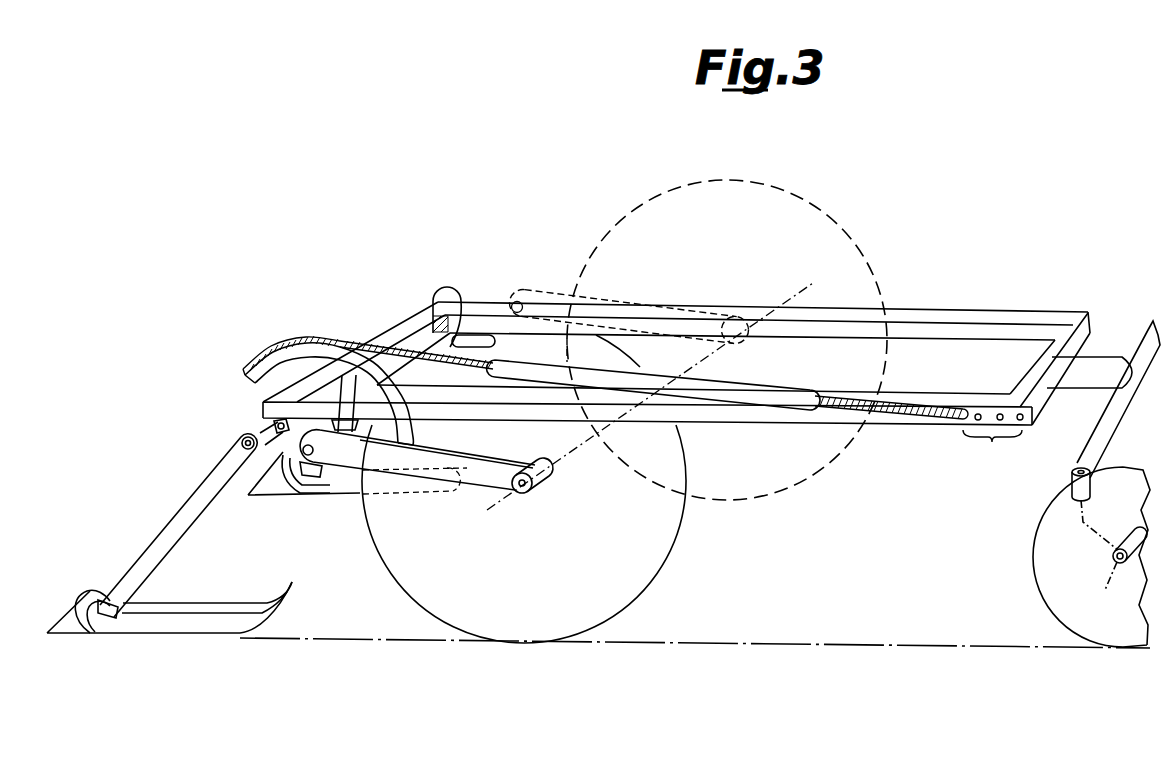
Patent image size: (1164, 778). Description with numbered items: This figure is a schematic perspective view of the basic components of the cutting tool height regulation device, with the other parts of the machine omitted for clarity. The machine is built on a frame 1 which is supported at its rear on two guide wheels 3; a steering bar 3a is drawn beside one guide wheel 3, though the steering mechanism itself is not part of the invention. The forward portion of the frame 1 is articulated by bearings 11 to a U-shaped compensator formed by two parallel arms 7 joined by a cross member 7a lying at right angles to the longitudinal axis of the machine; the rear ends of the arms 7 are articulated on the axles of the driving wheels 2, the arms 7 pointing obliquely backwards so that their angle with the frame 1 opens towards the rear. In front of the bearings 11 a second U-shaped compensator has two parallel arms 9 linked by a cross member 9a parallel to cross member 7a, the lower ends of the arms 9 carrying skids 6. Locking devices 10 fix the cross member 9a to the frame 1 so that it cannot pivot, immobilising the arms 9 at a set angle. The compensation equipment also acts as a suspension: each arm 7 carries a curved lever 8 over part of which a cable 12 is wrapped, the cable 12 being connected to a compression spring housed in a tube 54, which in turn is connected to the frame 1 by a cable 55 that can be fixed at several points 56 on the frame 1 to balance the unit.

The frame 1 is at (978, 317).
The driving wheels 2 is at (655, 567).
The guide wheels 3 is at (1043, 562).
The steering bar 3a is at (1147, 345).
The skids 6 is at (217, 612).
The arms 7 is at (447, 470).
The cross member 7a is at (458, 289).
The curved lever 8 is at (295, 362).
The arms 9 is at (203, 493).
The cross member 9a is at (268, 423).
The locking devices 10 is at (277, 462).
The bearings 11 is at (488, 342).
The cable 12 is at (387, 347).
The tube 54 is at (765, 393).
The cable 55 is at (915, 415).
The points 56 is at (993, 445).